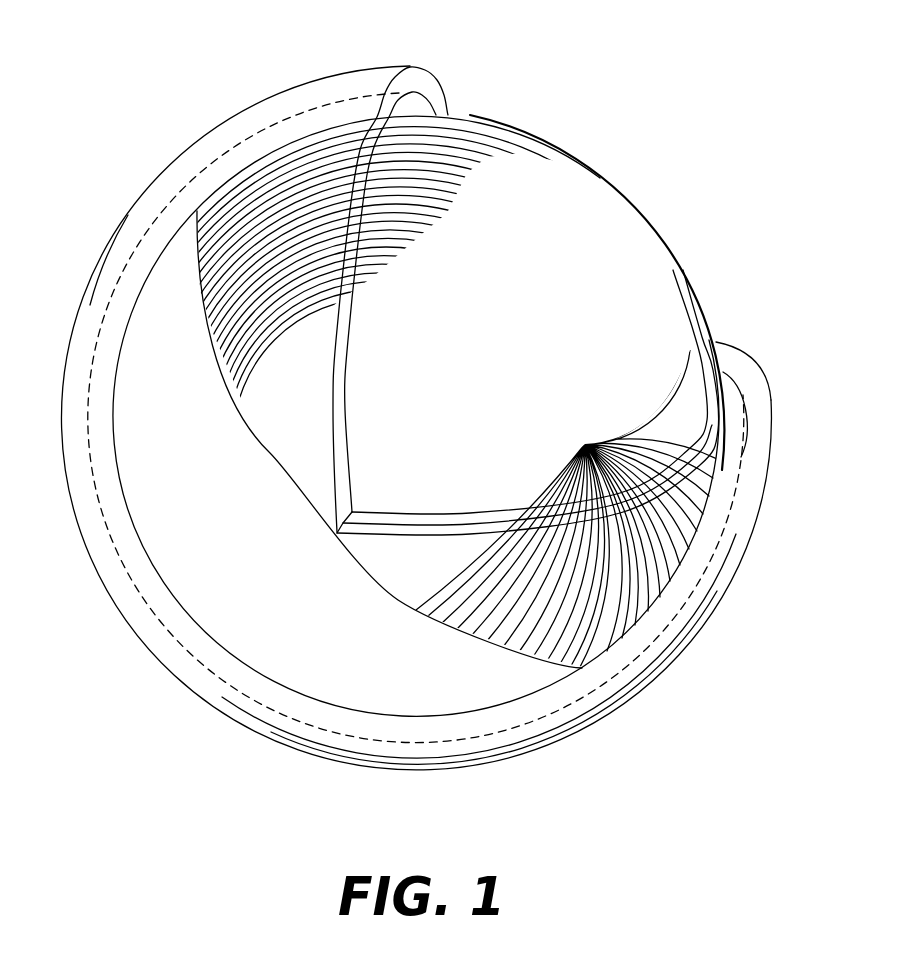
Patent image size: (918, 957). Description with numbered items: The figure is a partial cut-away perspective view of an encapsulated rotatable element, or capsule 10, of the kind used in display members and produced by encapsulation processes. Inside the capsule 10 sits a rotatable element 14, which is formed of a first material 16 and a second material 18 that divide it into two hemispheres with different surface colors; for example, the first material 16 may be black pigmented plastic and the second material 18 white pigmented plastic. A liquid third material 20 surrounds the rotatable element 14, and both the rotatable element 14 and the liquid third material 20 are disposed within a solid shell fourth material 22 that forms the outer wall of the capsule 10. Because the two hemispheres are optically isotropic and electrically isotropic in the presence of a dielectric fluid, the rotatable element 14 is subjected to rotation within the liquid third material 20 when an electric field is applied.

The capsule 10 is at (155, 123).
The rotatable element 14 is at (632, 165).
The first material 16 is at (660, 287).
The second material 18 is at (403, 663).
The liquid third material 20 is at (413, 105).
The solid shell fourth material 22 is at (762, 410).